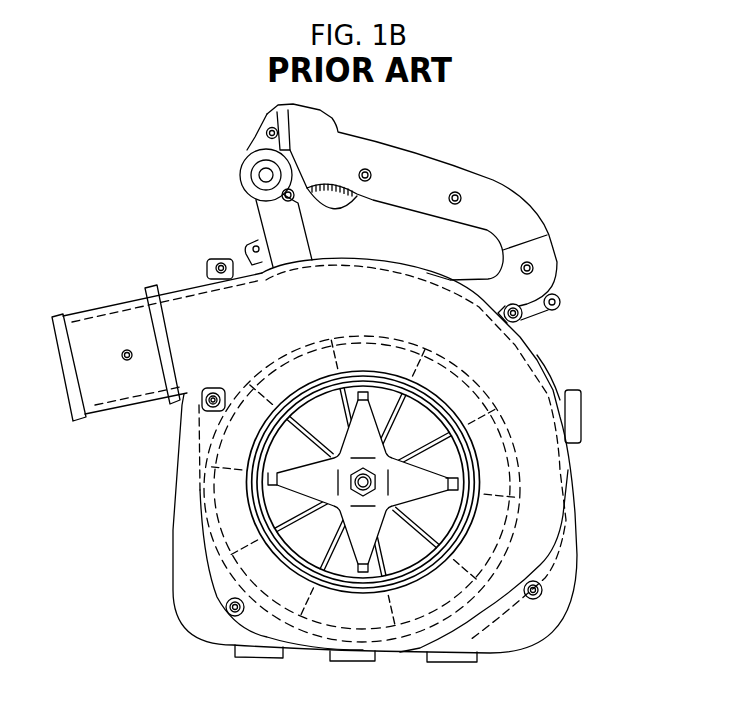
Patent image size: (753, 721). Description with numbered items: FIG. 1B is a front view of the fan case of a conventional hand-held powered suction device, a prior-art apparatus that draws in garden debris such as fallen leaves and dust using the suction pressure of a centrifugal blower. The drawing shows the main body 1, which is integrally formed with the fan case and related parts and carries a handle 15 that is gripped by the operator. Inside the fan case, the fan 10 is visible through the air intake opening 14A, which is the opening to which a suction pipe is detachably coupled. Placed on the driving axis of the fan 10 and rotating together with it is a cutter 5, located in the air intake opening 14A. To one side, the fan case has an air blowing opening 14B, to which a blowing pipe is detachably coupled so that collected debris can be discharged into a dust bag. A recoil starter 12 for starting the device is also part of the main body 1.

The main body 1 is at (165, 657).
The cutter 5 is at (377, 423).
The fan 10 is at (383, 547).
The recoil starter 12 is at (583, 407).
The air intake opening 14A is at (440, 472).
The air blowing opening 14B is at (106, 307).
The handle 15 is at (457, 170).